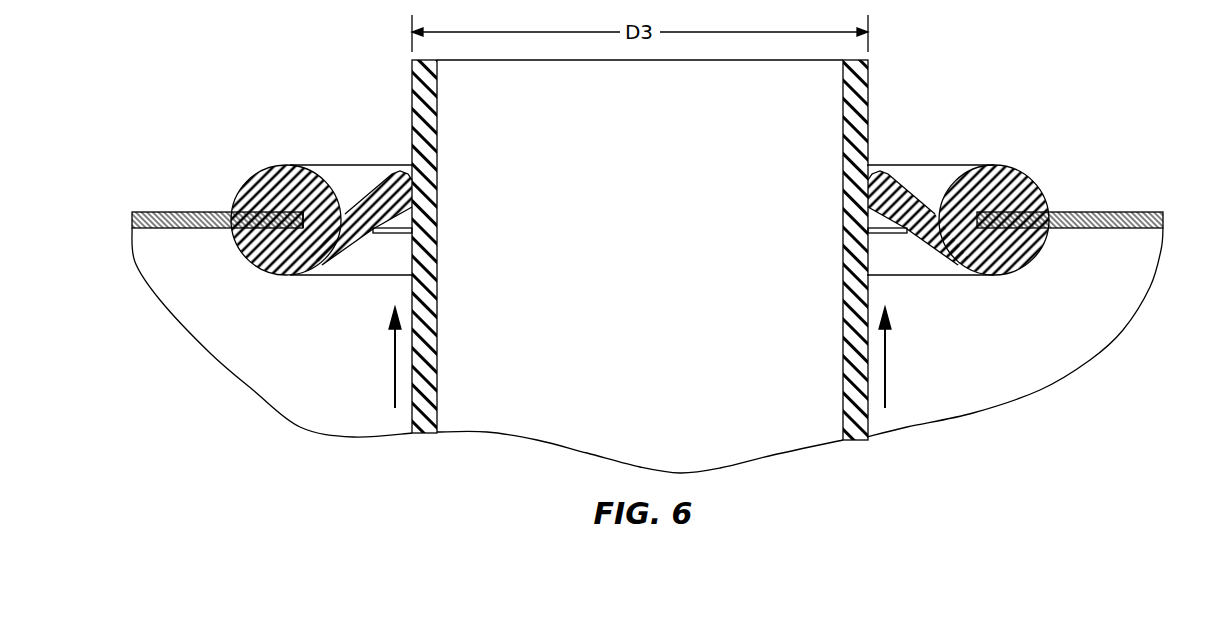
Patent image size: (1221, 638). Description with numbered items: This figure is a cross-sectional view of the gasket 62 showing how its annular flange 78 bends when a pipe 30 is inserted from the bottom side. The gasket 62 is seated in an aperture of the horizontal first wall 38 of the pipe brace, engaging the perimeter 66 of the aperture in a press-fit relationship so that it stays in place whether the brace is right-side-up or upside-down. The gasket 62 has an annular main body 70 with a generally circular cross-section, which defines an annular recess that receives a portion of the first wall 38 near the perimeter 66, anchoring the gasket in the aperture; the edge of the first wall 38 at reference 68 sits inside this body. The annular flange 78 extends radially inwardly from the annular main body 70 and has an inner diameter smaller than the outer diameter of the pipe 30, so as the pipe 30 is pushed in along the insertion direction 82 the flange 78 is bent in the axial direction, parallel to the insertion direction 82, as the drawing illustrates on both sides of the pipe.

The pipe 30 is at (869, 90).
The first wall 38 is at (138, 200).
The gasket 62 is at (330, 155).
The perimeter 66 is at (998, 228).
The panel edge 68 is at (300, 232).
The annular main body 70 is at (243, 178).
The annular flange 78 is at (377, 182).
The insertion direction 82 is at (887, 363).